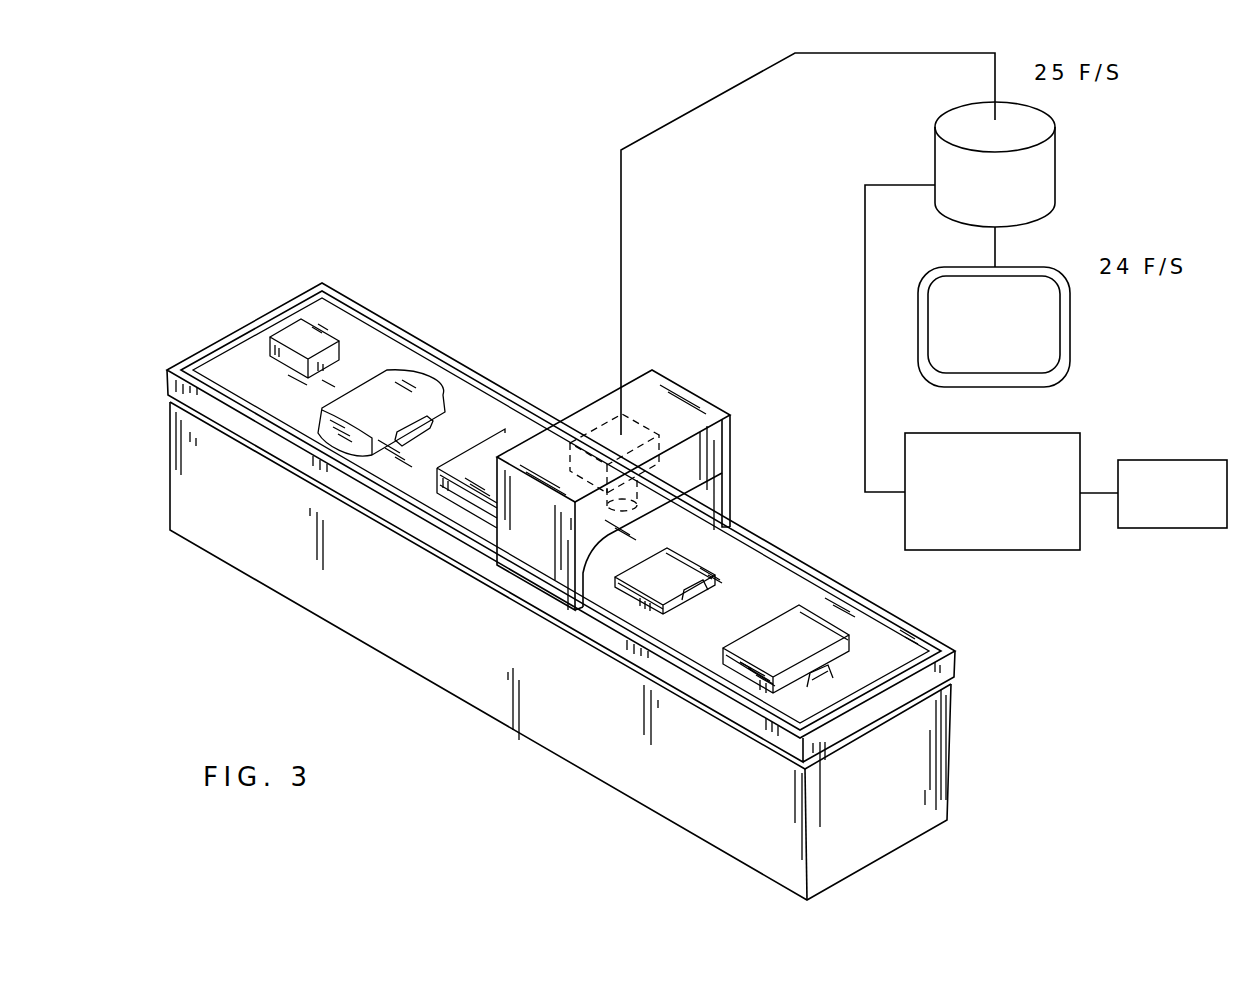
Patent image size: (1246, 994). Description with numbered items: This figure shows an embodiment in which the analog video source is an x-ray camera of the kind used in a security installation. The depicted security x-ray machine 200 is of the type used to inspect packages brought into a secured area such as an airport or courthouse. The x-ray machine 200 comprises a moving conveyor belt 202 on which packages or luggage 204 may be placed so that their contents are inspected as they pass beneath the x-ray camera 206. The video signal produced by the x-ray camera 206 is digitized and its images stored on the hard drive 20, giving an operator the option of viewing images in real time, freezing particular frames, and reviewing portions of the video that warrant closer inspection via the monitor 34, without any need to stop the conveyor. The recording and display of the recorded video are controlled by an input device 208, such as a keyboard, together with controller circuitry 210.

The hard drive 20 is at (938, 168).
The monitor 34 is at (918, 307).
The security x-ray machine 200 is at (462, 703).
The moving conveyor belt 202 is at (360, 340).
The packages or luggage 204 is at (392, 390).
The x-ray camera 206 is at (606, 448).
The input device 208 is at (1188, 529).
The controller circuitry 210 is at (1018, 551).